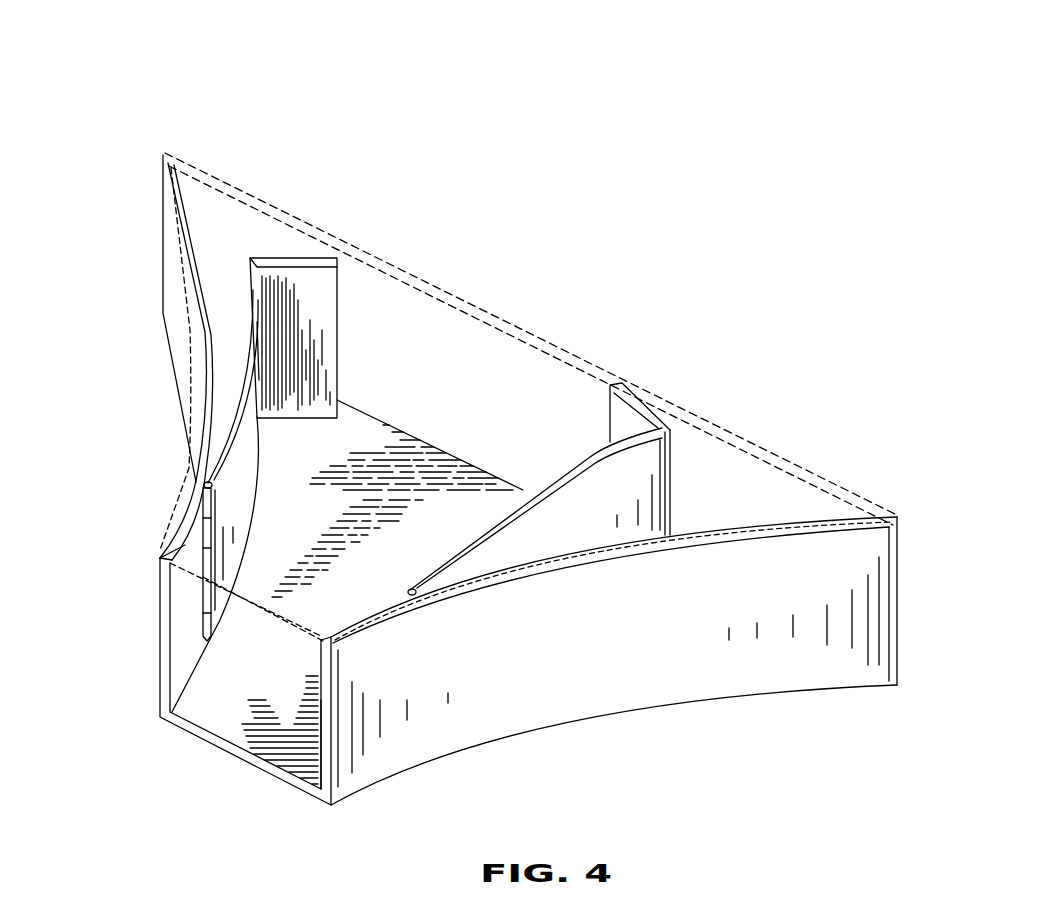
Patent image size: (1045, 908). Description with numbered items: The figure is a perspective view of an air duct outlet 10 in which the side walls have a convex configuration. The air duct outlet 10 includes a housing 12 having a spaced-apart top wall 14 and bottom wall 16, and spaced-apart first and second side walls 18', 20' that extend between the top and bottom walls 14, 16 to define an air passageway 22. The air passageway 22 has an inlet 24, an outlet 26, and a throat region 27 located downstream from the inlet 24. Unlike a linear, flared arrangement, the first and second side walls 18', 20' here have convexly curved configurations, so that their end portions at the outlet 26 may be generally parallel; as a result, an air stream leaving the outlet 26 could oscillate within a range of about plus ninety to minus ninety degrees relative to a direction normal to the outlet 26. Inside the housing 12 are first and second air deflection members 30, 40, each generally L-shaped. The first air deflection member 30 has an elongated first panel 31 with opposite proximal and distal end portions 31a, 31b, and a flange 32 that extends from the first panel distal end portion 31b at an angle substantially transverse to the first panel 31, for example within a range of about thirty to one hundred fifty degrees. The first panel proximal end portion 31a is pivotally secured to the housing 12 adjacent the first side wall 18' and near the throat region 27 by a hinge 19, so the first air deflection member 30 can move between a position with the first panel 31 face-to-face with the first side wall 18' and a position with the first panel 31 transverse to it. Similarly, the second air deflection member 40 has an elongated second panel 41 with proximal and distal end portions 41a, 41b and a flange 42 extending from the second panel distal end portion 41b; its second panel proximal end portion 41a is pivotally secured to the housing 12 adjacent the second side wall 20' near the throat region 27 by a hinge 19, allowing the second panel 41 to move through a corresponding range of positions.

The air duct outlet 10 is at (275, 148).
The housing 12 is at (633, 617).
The top wall 14 is at (492, 312).
The bottom wall 16 is at (322, 531).
The first side wall 18' is at (148, 357).
The hinge 19 is at (262, 607).
The second side wall 20' is at (611, 576).
The air passageway 22 is at (262, 662).
The inlet 24 is at (323, 740).
The outlet 26 is at (830, 518).
The throat region 27 is at (197, 540).
The first air deflection member 30 is at (347, 274).
The first panel 31 is at (245, 398).
The first panel proximal end portion 31a is at (217, 486).
The first panel distal end portion 31b is at (257, 322).
The flange 32 is at (307, 295).
The second air deflection member 40 is at (602, 440).
The second panel 41 is at (622, 498).
The second panel proximal end portion 41a is at (428, 568).
The second panel distal end portion 41b is at (660, 448).
The flange 42 is at (638, 396).